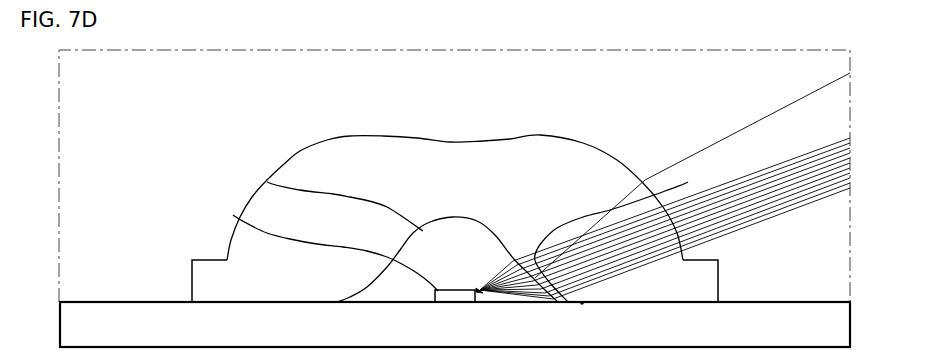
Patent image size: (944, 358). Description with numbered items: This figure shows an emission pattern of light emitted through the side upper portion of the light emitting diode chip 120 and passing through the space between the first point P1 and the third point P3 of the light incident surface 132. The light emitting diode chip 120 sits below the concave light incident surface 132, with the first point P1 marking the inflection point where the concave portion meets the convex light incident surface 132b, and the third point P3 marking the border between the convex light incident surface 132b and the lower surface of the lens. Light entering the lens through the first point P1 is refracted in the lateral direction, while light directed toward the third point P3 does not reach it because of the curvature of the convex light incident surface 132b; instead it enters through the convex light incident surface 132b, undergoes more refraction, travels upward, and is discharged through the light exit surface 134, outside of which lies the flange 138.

The light exit surface 134 is at (327, 141).
The light incident surface 132 is at (267, 182).
The convex light incident surface 132b is at (688, 182).
The light emitting diode chip 120 is at (233, 215).
The flange 138 is at (712, 270).
The first point P1 is at (640, 187).
The third point P3 is at (582, 303).